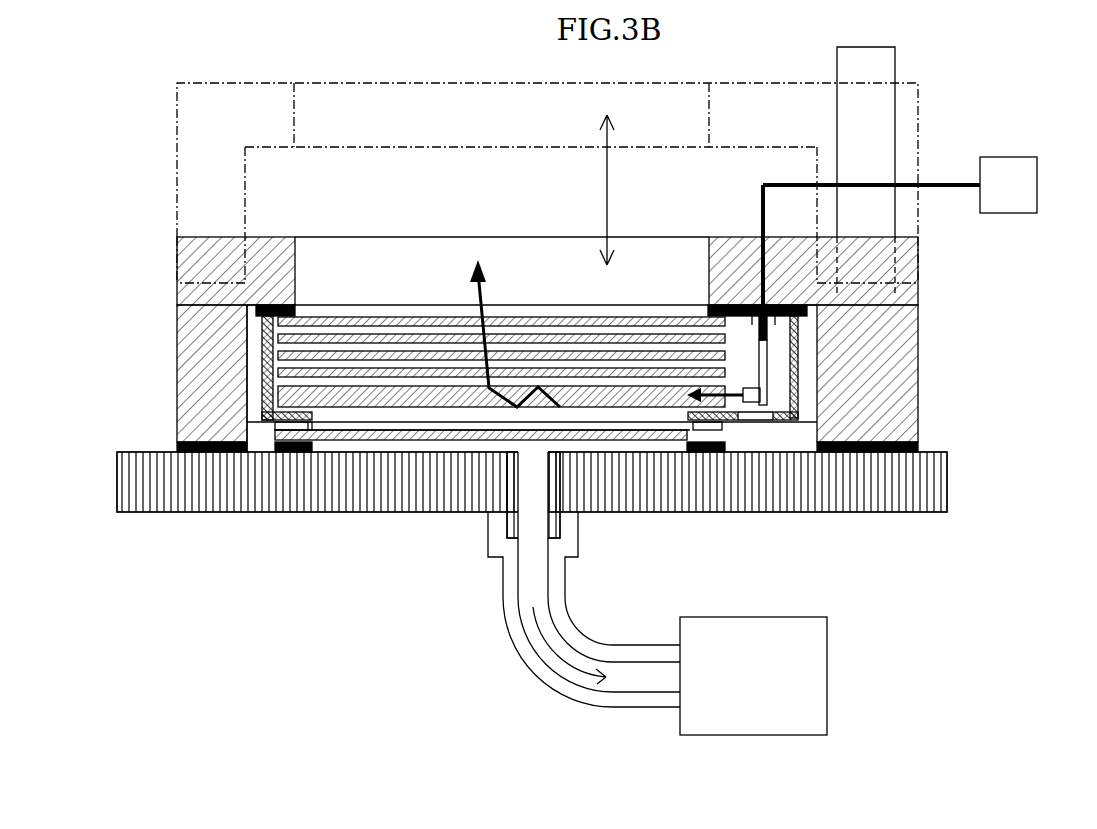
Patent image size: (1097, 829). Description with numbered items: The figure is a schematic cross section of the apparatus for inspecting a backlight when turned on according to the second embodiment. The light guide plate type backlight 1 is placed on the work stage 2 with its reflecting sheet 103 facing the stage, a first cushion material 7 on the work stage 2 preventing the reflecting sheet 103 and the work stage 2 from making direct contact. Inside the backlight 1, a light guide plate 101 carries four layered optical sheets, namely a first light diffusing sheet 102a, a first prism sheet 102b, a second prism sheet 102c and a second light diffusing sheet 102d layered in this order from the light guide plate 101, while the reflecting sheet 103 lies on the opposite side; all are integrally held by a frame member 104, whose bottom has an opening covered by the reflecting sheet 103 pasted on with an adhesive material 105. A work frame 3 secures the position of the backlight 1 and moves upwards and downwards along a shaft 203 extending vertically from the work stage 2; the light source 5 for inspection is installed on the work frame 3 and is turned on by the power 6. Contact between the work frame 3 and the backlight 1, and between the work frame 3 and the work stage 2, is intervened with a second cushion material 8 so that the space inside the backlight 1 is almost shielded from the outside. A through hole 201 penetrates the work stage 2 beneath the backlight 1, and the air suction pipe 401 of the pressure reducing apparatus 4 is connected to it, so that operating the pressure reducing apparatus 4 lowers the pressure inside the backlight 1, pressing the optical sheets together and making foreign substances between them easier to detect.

The backlight 1 is at (252, 367).
The work stage 2 is at (170, 523).
The work frame 3 is at (167, 303).
The pressure reducing apparatus 4 is at (802, 678).
The light source 5 is at (752, 395).
The power 6 is at (1010, 183).
The first cushion material 7 is at (707, 452).
The second cushion material 8 is at (278, 308).
The light guide plate 101 is at (335, 397).
The first light diffusing sheet 102a is at (352, 372).
The first prism sheet 102b is at (387, 356).
The second prism sheet 102c is at (633, 338).
The second light diffusing sheet 102d is at (558, 320).
The reflecting sheet 103 is at (388, 437).
The frame member 104 is at (745, 370).
The adhesive material 105 is at (288, 426).
The through hole 201 is at (524, 487).
The shaft 203 is at (868, 140).
The air suction pipe 401 is at (520, 668).